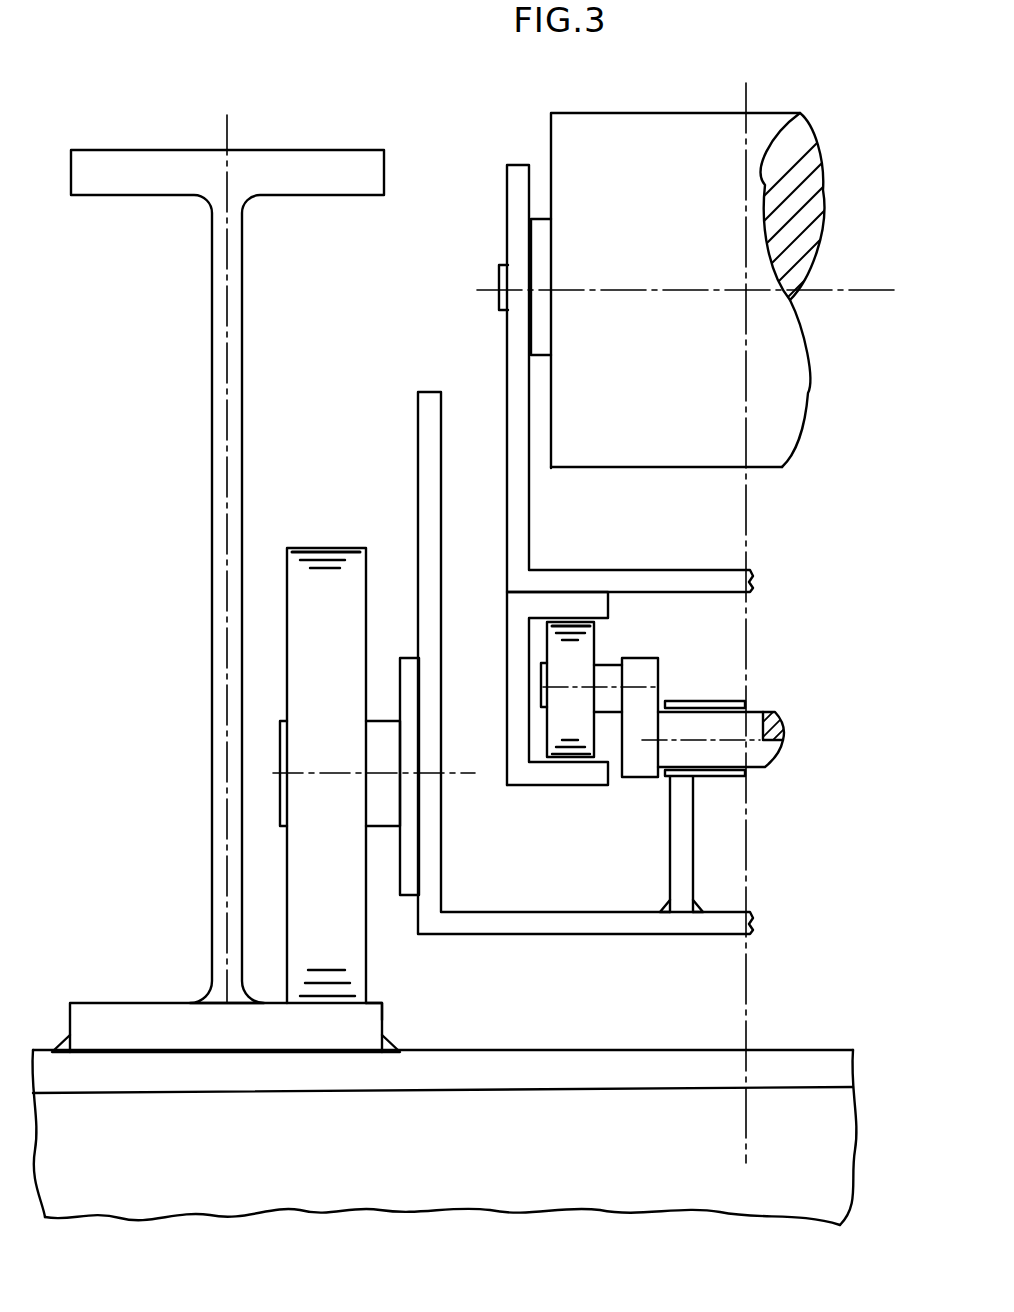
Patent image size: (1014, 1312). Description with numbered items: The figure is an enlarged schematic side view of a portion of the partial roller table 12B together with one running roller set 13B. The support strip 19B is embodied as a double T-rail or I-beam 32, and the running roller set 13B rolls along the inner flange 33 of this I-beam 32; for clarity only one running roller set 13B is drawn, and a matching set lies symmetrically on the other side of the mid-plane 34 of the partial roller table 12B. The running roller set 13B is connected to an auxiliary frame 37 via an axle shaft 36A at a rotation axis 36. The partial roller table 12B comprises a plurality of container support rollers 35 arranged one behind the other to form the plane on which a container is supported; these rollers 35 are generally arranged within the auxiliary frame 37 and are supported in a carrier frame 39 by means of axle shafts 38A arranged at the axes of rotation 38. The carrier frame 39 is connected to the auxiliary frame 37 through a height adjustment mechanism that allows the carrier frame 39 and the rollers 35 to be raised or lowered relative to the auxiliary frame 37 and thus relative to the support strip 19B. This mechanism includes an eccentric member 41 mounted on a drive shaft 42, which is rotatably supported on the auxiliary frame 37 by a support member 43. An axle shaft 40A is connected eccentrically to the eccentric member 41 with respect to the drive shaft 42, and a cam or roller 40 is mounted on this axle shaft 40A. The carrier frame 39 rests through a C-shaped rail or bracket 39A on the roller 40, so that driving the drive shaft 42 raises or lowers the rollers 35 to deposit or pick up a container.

The partial roller table 12B is at (830, 106).
The running roller set 13B is at (300, 940).
The support strip 19B is at (148, 138).
The I-beam 32 is at (133, 1016).
The inner flange 33 is at (368, 1003).
The mid-plane 34 is at (748, 112).
The container support rollers 35 is at (653, 127).
The rotation axis 36 is at (330, 773).
The axle shaft 36A is at (393, 807).
The auxiliary frame 37 is at (426, 400).
The axes of rotation 38 is at (842, 290).
The axle shafts 38A is at (537, 250).
The carrier frame 39 is at (518, 172).
The C-shaped rail or bracket 39A is at (512, 628).
The cam or roller 40 is at (585, 654).
The axle shaft 40A is at (615, 673).
The eccentric member 41 is at (652, 697).
The drive shaft 42 is at (758, 760).
The support member 43 is at (690, 868).